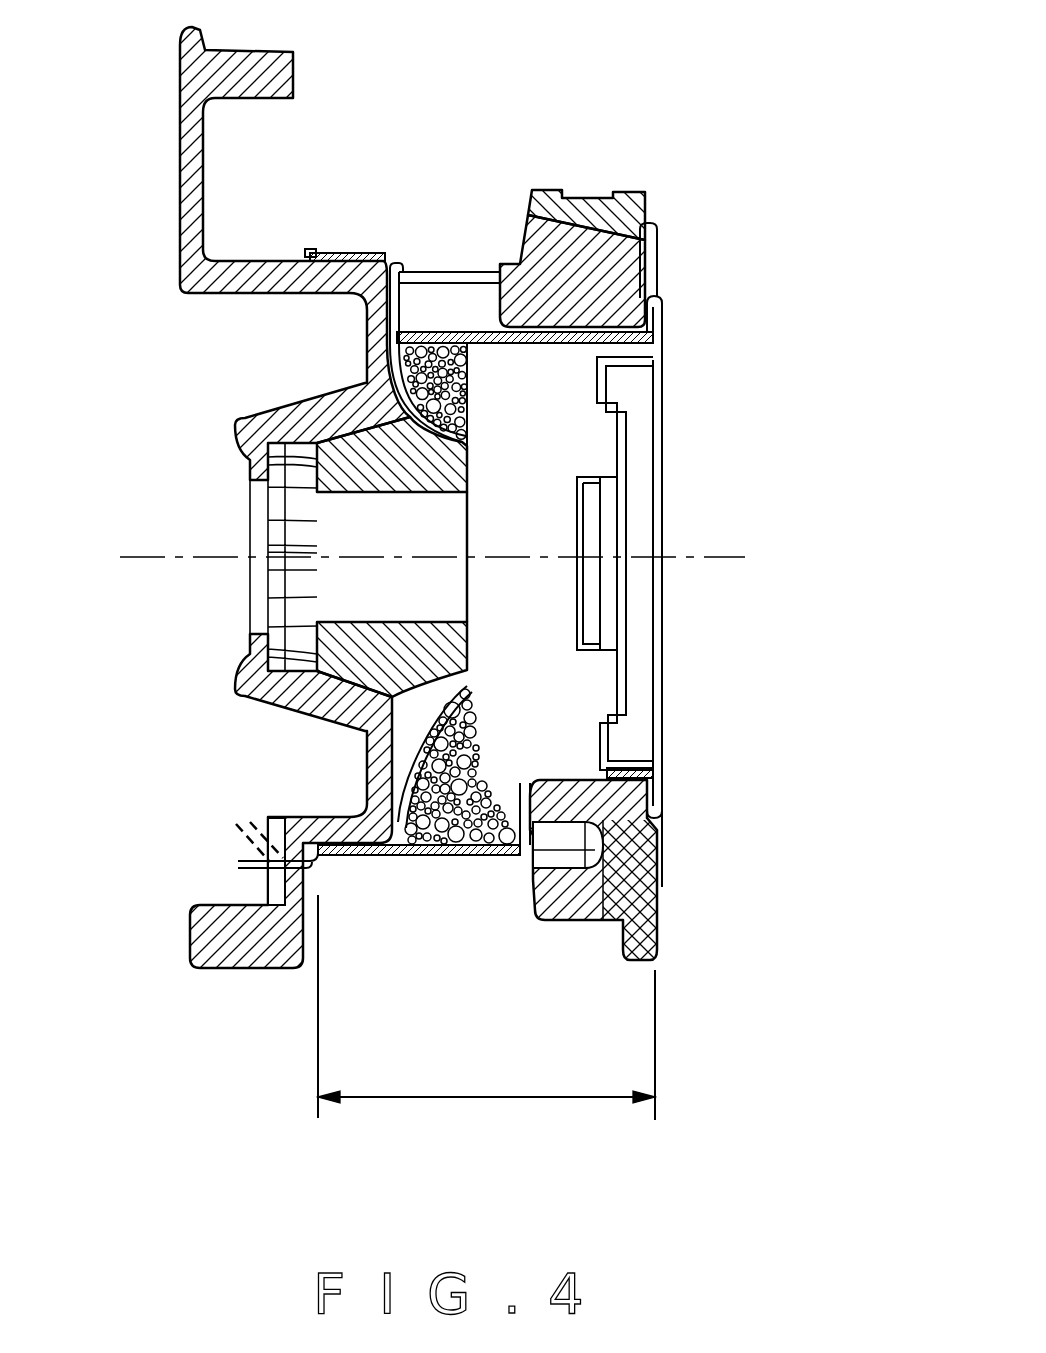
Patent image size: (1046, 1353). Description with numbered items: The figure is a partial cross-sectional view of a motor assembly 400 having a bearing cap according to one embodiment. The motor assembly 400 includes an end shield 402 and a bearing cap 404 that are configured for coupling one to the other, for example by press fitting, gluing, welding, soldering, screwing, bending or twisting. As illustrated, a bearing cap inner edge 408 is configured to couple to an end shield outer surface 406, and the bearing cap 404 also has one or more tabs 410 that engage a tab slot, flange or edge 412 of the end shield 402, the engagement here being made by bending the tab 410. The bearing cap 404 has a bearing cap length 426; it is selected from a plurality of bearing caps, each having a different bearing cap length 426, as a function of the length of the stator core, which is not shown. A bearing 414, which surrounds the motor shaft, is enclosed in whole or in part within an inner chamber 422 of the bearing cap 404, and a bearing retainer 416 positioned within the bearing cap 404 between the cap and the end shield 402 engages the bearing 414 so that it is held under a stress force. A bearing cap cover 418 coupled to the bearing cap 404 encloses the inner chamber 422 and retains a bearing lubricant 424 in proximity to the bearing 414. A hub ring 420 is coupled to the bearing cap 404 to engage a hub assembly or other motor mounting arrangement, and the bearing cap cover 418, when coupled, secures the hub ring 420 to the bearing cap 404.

The motor assembly 400 is at (522, 30).
The end shield 402 is at (203, 180).
The bearing cap 404 is at (361, 853).
The end shield outer surface 406 is at (288, 261).
The bearing cap inner edge 408 is at (392, 265).
The tab 410 is at (237, 831).
The tab slot 412 is at (305, 877).
The bearing 414 is at (470, 650).
The bearing retainer 416 is at (462, 402).
The bearing cap cover 418 is at (665, 512).
The hub ring 420 is at (618, 266).
The inner chamber 422 is at (533, 688).
The bearing lubricant 424 is at (458, 852).
The bearing cap length 426 is at (452, 1097).